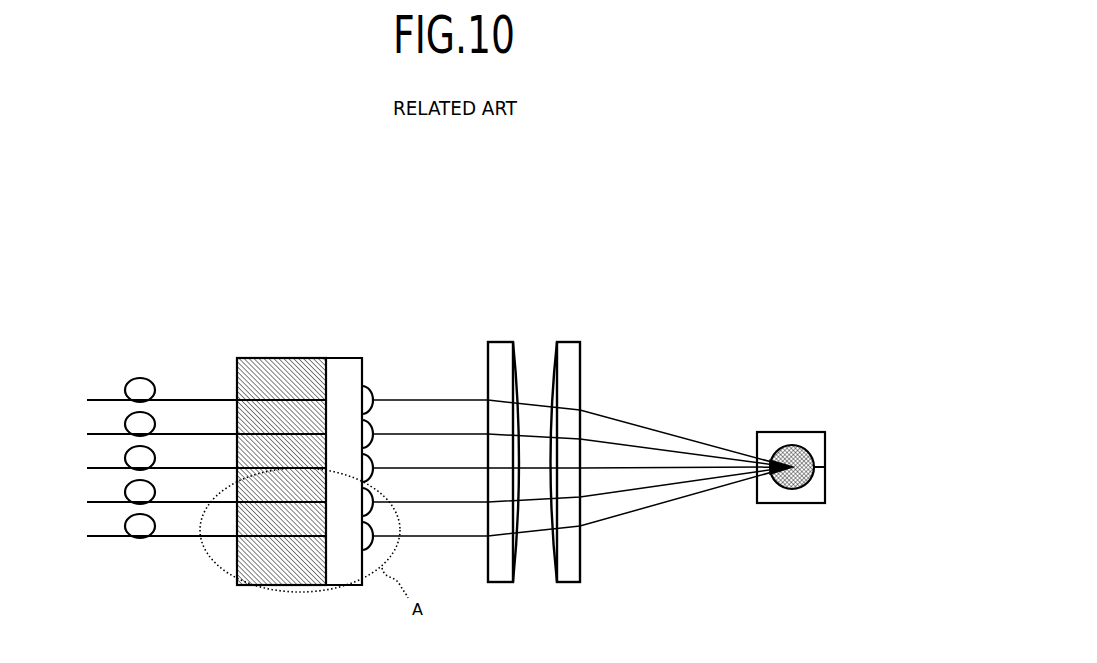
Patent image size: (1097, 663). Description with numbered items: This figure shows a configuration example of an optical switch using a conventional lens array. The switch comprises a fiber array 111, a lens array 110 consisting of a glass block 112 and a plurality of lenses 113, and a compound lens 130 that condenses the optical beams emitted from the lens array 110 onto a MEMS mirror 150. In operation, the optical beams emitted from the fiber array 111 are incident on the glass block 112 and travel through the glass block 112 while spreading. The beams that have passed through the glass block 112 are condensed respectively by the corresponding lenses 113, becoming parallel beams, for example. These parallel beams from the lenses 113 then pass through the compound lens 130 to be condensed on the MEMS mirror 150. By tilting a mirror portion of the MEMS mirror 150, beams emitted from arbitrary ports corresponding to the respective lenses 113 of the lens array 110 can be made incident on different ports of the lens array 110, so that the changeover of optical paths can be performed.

The lens array 110 is at (452, 240).
The fiber array 111 is at (243, 357).
The glass block 112 is at (342, 357).
The lens 113 is at (367, 380).
The compound lens 130 is at (585, 330).
The MEMS mirror 150 is at (793, 432).